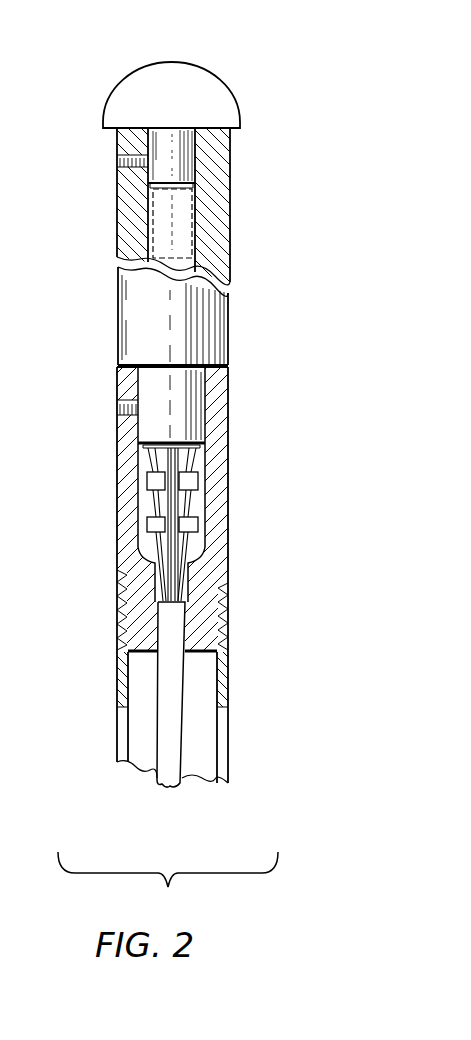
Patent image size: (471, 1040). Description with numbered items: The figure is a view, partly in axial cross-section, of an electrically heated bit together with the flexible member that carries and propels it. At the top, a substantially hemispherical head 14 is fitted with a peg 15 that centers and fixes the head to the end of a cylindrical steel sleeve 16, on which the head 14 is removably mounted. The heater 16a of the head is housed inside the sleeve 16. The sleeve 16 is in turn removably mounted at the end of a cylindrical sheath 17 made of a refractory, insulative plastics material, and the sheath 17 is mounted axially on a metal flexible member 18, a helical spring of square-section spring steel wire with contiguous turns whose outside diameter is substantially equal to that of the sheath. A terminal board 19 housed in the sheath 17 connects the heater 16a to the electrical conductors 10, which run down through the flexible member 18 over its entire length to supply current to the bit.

The electrical conductors 10 is at (168, 715).
The hemispherical head 14 is at (106, 98).
The peg 15 is at (180, 160).
The cylindrical steel sleeve 16 is at (218, 253).
The heater 16a is at (180, 221).
The cylindrical sheath 17 is at (217, 399).
The flexible member 18 is at (223, 662).
The terminal board 19 is at (170, 503).